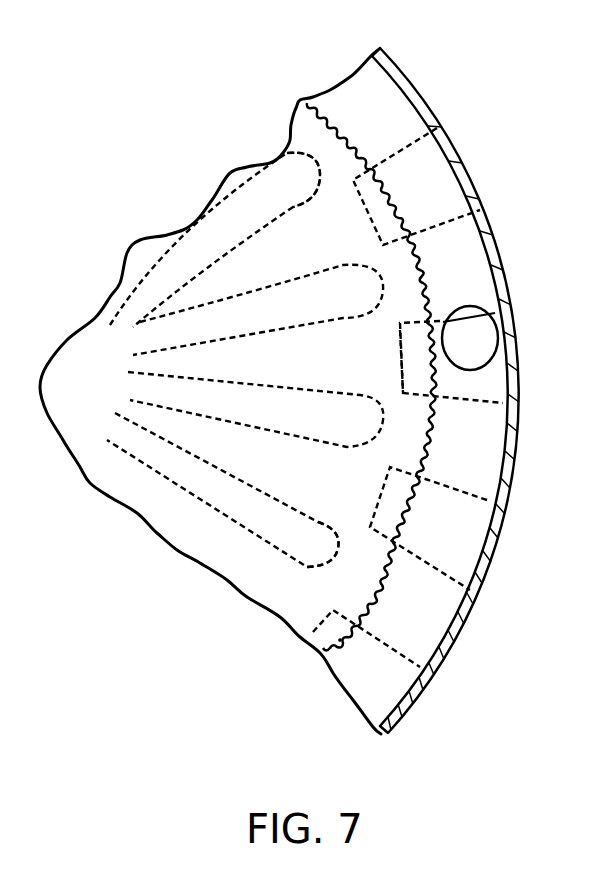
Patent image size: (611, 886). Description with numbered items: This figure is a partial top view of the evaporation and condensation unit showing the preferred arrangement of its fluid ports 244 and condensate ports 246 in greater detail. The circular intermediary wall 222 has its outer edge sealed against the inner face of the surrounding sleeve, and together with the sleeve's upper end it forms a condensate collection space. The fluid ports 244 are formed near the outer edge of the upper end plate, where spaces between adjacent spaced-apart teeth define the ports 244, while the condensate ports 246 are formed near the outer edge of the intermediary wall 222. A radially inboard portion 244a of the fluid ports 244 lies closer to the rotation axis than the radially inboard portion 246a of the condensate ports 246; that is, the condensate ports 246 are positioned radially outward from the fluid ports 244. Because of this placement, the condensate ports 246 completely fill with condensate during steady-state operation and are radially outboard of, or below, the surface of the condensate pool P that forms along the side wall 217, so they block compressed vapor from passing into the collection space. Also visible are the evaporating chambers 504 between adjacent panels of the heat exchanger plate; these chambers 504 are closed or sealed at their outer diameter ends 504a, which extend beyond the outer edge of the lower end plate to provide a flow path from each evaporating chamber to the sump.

The side wall 217 is at (423, 90).
The intermediary wall 222 is at (380, 93).
The fluid ports 244 is at (457, 220).
The radially inboard portion 244a is at (400, 357).
The condensate ports 246 is at (493, 367).
The radially inboard portion 246a is at (443, 322).
The evaporating chambers 504 is at (331, 315).
The outer diameter ends 504a is at (303, 150).
The condensate pool P is at (340, 640).